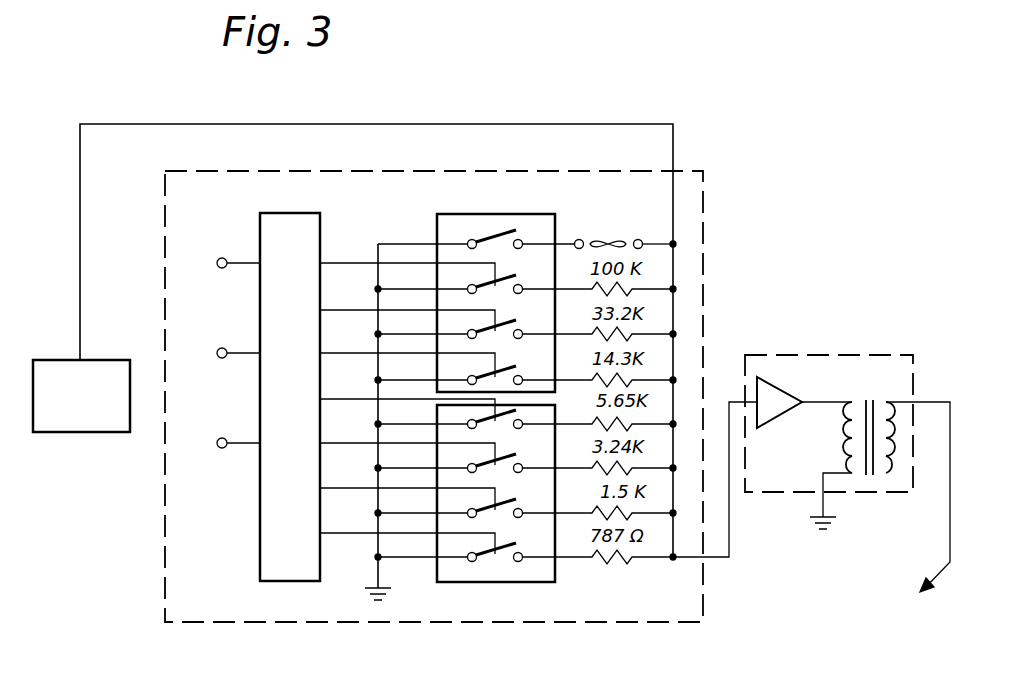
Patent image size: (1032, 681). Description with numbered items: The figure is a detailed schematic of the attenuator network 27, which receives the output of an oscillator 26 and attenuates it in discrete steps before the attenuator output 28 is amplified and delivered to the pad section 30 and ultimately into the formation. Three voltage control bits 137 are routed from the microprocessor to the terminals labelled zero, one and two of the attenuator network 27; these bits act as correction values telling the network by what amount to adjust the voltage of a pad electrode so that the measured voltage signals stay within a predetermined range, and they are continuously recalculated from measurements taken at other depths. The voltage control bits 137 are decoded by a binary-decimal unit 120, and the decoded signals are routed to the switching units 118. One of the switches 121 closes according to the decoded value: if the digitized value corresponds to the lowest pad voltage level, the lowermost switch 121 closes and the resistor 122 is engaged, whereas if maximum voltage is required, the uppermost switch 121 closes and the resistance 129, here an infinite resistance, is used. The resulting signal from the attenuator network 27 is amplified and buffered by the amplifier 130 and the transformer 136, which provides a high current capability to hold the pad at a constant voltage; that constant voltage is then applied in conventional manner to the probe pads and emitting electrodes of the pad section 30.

The oscillator 26 is at (94, 409).
The attenuator network 27 is at (272, 632).
The attenuator output 28 is at (870, 492).
The pad section 30 is at (870, 529).
The switching units 118 is at (437, 213).
The binary-decimal unit 120 is at (260, 566).
The switches 121 is at (497, 235).
The resistor 122 is at (628, 561).
The resistance 129 is at (648, 243).
The amplifier 130 is at (770, 377).
The transformer 136 is at (873, 400).
The voltage control bits 137 is at (247, 262).